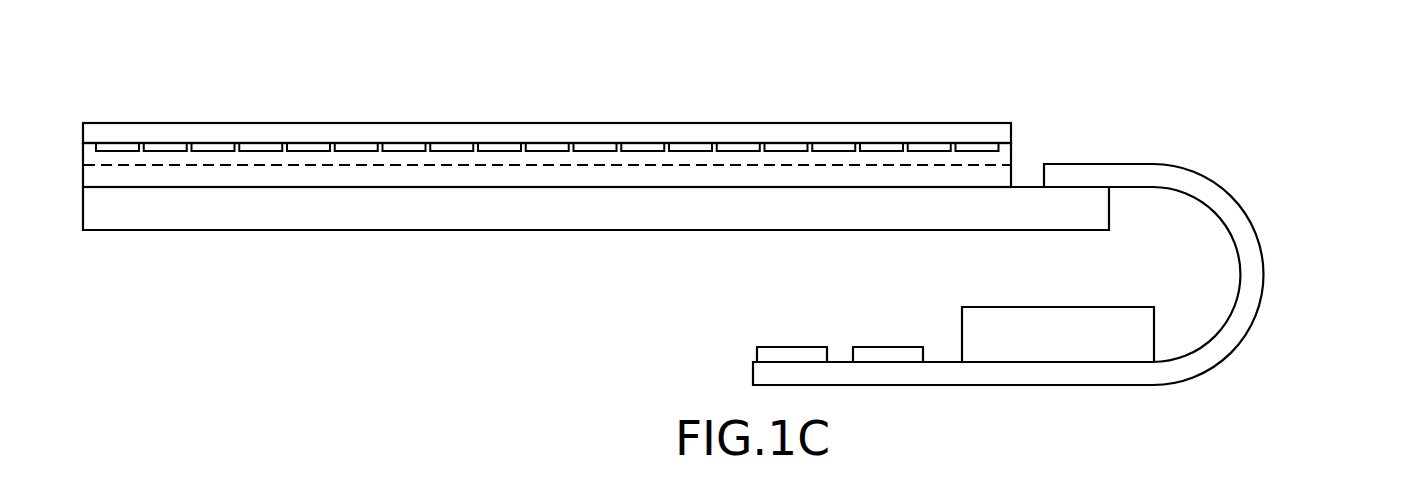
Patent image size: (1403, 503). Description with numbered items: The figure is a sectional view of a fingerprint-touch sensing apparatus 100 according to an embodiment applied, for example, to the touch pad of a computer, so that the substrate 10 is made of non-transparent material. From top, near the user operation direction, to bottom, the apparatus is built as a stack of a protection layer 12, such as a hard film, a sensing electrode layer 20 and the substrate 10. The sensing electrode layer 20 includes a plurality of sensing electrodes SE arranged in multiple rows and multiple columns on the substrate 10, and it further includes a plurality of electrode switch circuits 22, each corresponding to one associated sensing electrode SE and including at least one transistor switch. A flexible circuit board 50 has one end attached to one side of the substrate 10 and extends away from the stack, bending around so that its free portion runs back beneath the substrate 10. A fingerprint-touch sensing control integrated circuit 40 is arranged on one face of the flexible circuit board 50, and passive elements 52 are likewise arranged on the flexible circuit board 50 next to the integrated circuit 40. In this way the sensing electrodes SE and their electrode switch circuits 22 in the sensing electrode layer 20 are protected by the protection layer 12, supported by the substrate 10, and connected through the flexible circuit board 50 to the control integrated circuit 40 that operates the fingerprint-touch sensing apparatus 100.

The fingerprint-touch sensing apparatus 100 is at (771, 55).
The substrate 10 is at (325, 218).
The protection layer 12 is at (640, 135).
The sensing electrode layer 20 is at (192, 177).
The electrode switch circuits 22 is at (258, 158).
The sensing electrodes SE is at (930, 147).
The fingerprint-touch sensing control integrated circuit 40 is at (1040, 315).
The flexible circuit board 50 is at (1233, 216).
The passive elements 52 is at (787, 353).